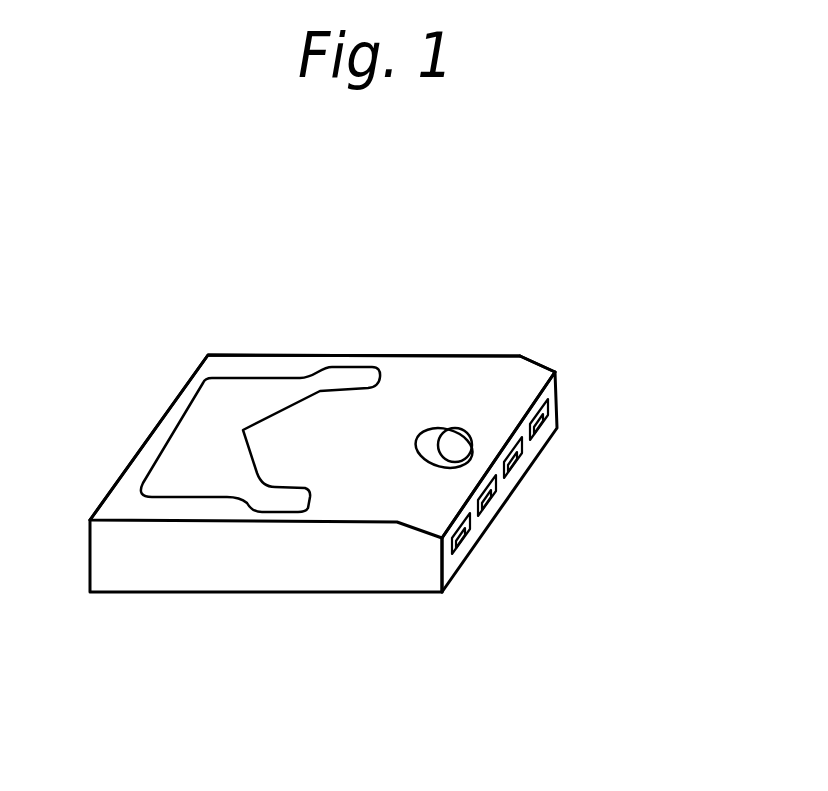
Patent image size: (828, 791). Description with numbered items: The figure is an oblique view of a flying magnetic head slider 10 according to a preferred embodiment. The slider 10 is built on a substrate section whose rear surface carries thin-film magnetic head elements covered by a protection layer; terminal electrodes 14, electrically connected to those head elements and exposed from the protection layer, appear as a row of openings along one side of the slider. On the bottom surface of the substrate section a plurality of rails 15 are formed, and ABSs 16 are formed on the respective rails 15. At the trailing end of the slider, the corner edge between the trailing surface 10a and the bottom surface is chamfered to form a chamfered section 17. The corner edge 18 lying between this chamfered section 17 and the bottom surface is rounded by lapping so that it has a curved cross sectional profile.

The magnetic head slider 10 is at (363, 270).
The trailing surface 10a is at (445, 572).
The terminal electrodes 14 is at (538, 420).
The rails 15 is at (163, 438).
The ABSs 16 is at (252, 388).
The chamfered section 17 is at (555, 372).
The corner edge 18 is at (517, 372).